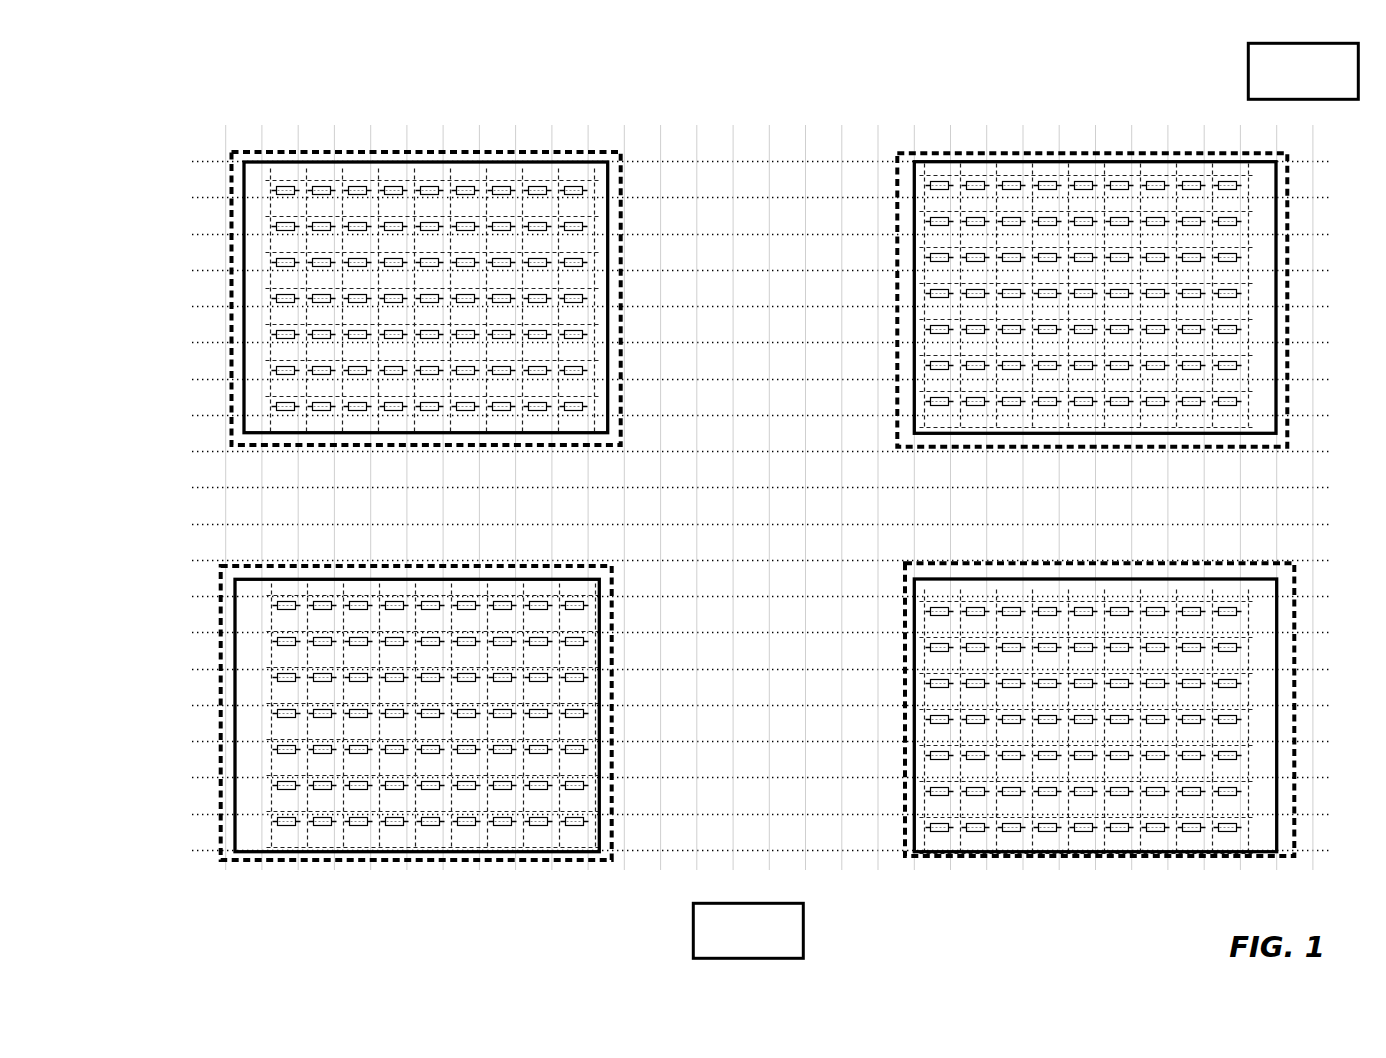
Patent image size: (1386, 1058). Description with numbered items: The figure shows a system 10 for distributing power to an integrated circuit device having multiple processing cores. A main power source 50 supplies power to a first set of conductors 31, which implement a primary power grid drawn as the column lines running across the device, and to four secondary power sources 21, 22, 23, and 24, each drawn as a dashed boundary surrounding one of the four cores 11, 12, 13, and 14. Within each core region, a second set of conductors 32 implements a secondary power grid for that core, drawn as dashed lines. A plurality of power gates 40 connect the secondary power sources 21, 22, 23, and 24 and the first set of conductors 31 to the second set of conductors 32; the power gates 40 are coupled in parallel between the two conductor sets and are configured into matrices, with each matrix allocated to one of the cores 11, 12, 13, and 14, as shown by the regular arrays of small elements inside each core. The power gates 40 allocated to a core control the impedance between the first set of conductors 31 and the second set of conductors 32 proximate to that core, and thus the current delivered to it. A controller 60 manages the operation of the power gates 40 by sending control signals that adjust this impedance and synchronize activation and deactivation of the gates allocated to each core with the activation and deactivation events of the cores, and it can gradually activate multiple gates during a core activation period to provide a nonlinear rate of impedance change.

The system 10 is at (731, 462).
The core 11 is at (235, 695).
The core 12 is at (1277, 713).
The core 13 is at (1277, 260).
The core 14 is at (243, 270).
The secondary power source 21 is at (220, 762).
The secondary power source 22 is at (1296, 622).
The secondary power source 23 is at (1045, 152).
The secondary power source 24 is at (543, 150).
The first set of conductors 31 is at (226, 122).
The second set of conductors 32 is at (395, 173).
The power gates 40 is at (330, 177).
The main power source 50 is at (1303, 71).
The controller 60 is at (748, 930).